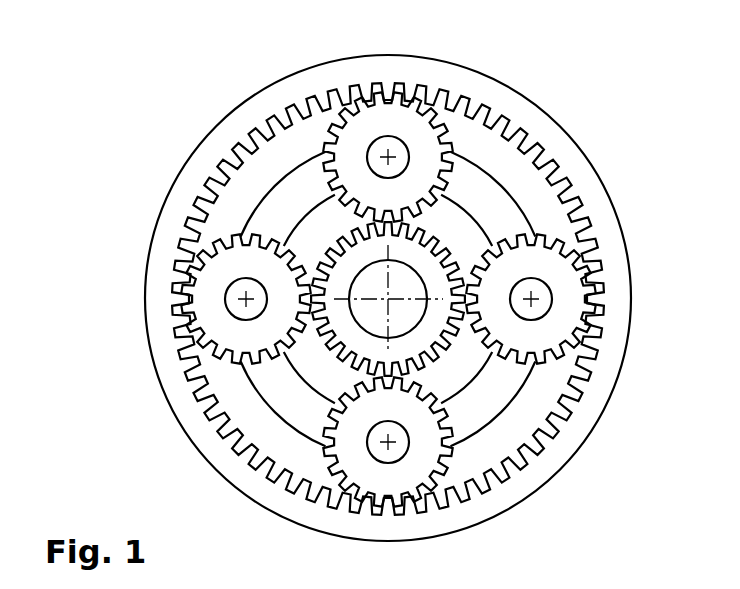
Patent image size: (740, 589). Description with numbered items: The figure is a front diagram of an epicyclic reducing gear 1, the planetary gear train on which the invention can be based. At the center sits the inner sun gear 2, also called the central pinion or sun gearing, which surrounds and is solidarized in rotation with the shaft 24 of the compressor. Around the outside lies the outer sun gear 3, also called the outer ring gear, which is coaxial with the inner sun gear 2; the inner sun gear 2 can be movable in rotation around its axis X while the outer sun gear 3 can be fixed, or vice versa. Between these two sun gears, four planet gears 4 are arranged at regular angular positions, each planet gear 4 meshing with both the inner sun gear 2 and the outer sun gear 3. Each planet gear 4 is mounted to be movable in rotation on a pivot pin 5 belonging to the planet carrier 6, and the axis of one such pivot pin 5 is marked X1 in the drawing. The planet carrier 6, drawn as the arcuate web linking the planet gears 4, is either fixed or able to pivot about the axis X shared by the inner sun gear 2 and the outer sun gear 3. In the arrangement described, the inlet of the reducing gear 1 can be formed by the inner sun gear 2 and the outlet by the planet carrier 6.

The epicyclic reducing gear 1 is at (602, 101).
The inner sun gear 2 is at (280, 403).
The outer sun gear 3 is at (513, 488).
The planet gear 4 is at (353, 145).
The pivot pin 5 is at (397, 148).
The planet carrier 6 is at (467, 410).
The shaft 24 is at (412, 318).
The axis X is at (388, 299).
The planet gear axis X1 is at (533, 301).